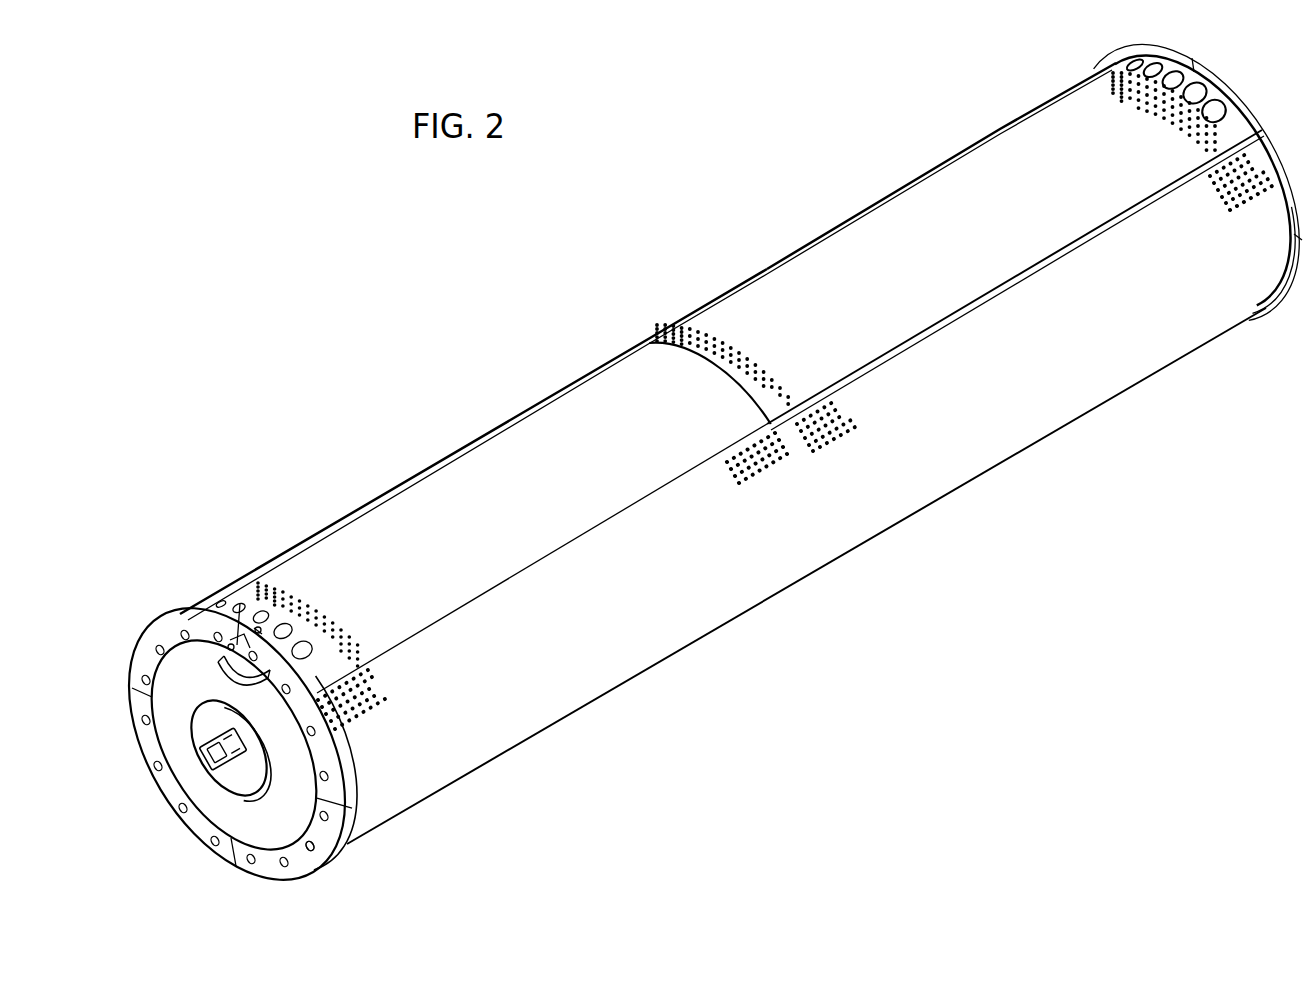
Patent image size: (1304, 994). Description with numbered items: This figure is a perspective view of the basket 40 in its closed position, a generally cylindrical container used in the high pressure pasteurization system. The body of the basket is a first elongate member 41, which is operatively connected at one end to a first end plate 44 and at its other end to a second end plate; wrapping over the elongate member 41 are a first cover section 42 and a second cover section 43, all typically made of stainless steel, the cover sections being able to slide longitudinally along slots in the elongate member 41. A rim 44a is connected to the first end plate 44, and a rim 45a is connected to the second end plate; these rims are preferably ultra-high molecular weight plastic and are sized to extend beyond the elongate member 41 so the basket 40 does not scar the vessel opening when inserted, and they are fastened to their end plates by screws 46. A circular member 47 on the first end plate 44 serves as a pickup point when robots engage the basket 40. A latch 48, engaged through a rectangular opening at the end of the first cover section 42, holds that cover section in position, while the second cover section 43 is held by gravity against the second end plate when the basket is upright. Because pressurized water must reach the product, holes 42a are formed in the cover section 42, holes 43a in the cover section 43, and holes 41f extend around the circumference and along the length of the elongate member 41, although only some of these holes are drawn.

The basket 40 is at (1197, 345).
The first elongate member 41 is at (867, 543).
The holes 41f is at (383, 692).
The first cover section 42 is at (503, 520).
The holes 42a is at (315, 612).
The second cover section 43 is at (914, 282).
The holes 43a is at (740, 347).
The first end plate 44 is at (234, 745).
The rim 44a is at (158, 624).
The rim 45a is at (1123, 55).
The screws 46 is at (314, 848).
The circular member 47 is at (213, 703).
The latch 48 is at (240, 603).